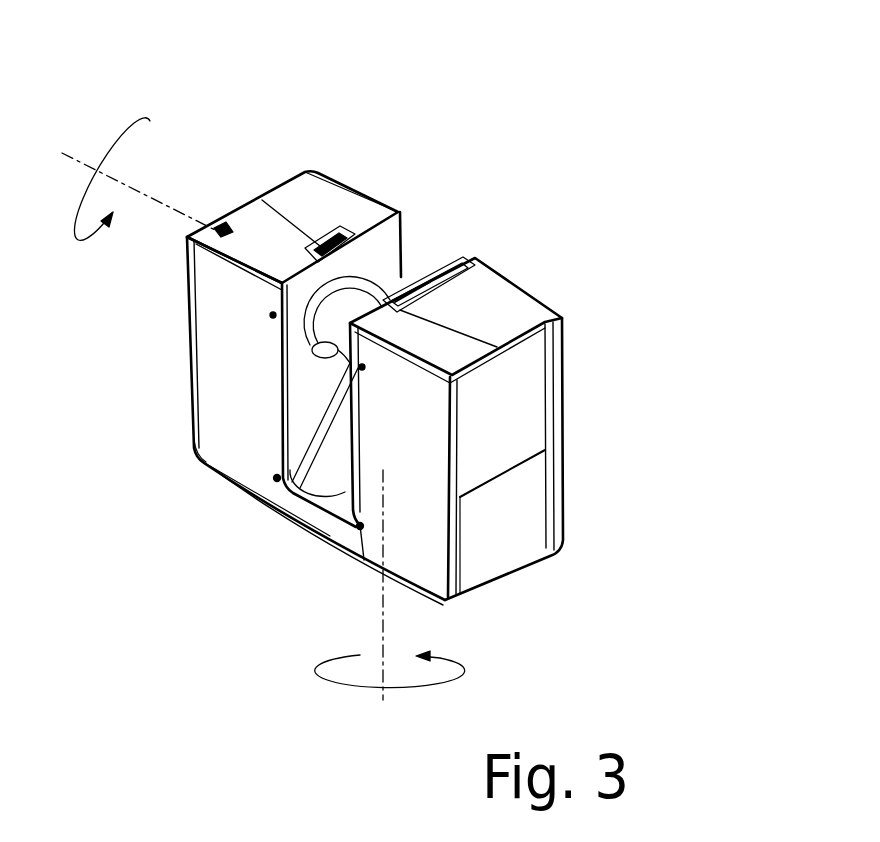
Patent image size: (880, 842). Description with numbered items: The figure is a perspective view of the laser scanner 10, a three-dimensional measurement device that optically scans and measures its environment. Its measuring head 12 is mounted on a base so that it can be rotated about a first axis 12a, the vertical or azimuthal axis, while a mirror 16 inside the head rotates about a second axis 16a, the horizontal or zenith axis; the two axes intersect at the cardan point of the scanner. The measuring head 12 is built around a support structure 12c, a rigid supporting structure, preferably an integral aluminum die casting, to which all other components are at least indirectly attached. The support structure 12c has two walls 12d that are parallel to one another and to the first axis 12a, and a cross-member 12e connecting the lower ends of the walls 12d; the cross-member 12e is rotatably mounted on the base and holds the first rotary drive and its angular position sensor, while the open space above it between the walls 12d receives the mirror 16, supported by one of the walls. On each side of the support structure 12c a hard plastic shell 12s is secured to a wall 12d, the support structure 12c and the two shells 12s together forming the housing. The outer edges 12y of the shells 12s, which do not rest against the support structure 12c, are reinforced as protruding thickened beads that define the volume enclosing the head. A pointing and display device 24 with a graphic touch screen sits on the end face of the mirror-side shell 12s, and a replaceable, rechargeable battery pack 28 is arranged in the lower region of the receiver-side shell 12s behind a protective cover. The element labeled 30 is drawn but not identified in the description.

The laser scanner 10 is at (563, 194).
The measuring head 12 is at (184, 392).
The first axis 12a is at (384, 694).
The support structure 12c is at (332, 646).
The walls 12d is at (282, 453).
The cross-member 12e is at (322, 473).
The shell 12s is at (220, 316).
The outer edges 12y is at (187, 433).
The mirror 16 is at (402, 276).
The second axis 16a is at (160, 200).
The pointing and display device 24 is at (282, 184).
The battery pack 28 is at (523, 500).
The latch 30 is at (378, 215).